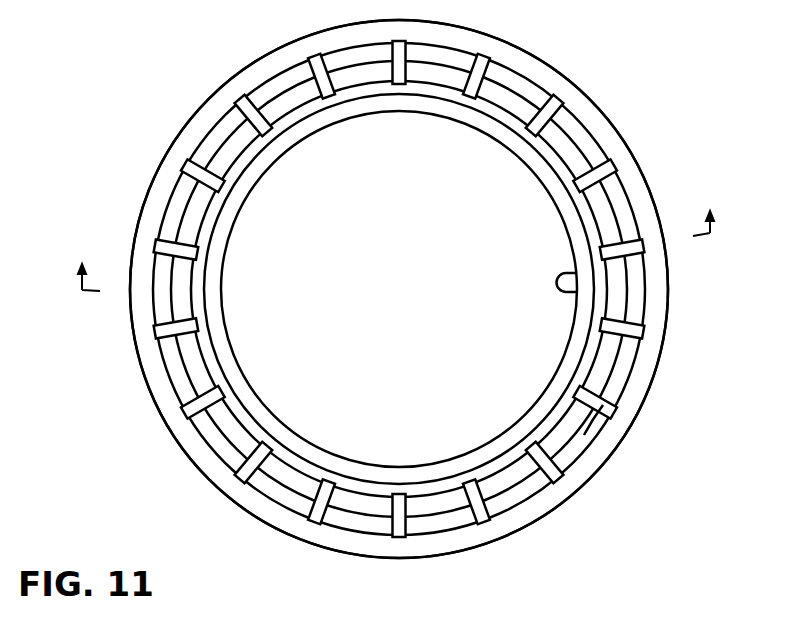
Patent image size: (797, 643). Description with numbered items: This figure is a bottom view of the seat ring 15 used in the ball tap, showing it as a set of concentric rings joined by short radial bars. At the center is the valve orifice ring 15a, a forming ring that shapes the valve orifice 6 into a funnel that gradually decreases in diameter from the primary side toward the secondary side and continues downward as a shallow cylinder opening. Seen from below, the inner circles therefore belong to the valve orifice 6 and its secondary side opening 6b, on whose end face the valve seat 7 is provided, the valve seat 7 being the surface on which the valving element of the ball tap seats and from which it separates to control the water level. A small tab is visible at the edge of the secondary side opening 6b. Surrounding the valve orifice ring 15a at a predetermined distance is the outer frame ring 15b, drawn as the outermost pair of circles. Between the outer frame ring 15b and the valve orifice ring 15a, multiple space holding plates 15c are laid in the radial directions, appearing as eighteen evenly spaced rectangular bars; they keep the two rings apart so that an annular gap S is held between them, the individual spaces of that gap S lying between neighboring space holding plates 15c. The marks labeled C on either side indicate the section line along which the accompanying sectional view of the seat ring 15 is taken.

The seat ring 15 is at (540, 77).
The valve orifice ring 15a is at (537, 170).
The outer frame ring 15b is at (657, 338).
The space holding plates 15c is at (620, 392).
The valve orifice 6 is at (230, 235).
The secondary side opening 6b is at (577, 280).
The valve seat 7 is at (455, 470).
The annular gap S is at (583, 440).
The section line C- C is at (393, 239).